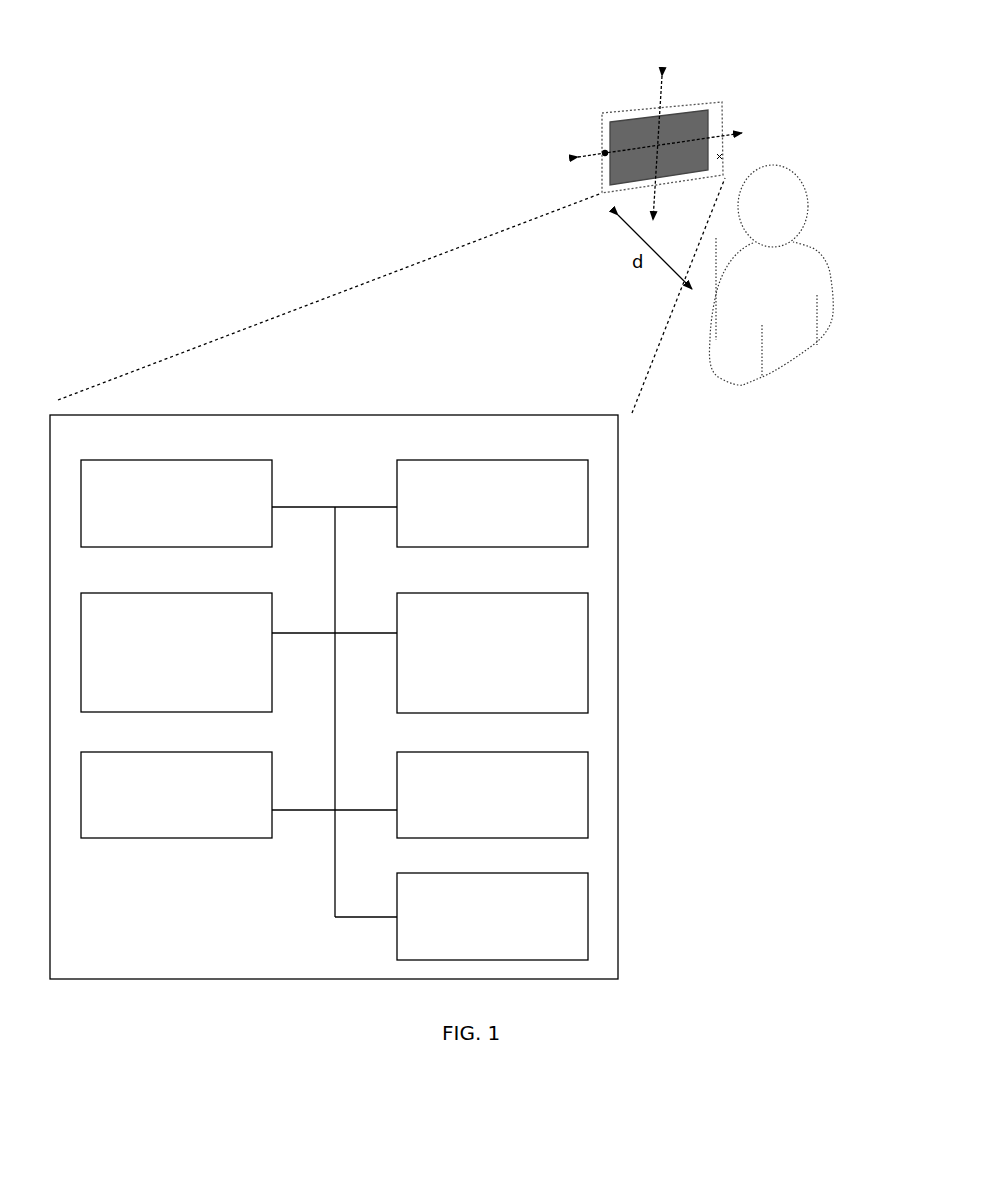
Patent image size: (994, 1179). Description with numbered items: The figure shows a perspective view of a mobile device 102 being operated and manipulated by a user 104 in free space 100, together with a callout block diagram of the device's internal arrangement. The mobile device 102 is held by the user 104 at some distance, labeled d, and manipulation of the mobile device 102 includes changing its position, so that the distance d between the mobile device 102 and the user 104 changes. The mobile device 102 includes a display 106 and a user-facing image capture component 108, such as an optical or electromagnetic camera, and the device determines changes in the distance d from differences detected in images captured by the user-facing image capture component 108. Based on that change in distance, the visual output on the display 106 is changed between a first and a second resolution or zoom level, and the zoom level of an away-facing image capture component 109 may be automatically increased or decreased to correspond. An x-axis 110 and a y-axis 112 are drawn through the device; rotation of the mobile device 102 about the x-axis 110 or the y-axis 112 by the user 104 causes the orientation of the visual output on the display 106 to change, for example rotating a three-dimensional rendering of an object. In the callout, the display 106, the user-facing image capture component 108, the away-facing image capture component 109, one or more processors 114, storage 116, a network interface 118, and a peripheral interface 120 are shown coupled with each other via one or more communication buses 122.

The free space 100 is at (425, 165).
The mobile device 102 is at (694, 92).
The user 104 is at (828, 218).
The display 106 is at (478, 816).
The user-facing image capture component 108 is at (162, 686).
The away-facing image capture component 109 is at (478, 700).
The x-axis 110 is at (697, 137).
The y-axis 112 is at (660, 90).
The processor 114 is at (162, 525).
The storage 116 is at (478, 525).
The network interface 118 is at (162, 816).
The peripheral interface 120 is at (478, 951).
The communication bus 122 is at (335, 898).